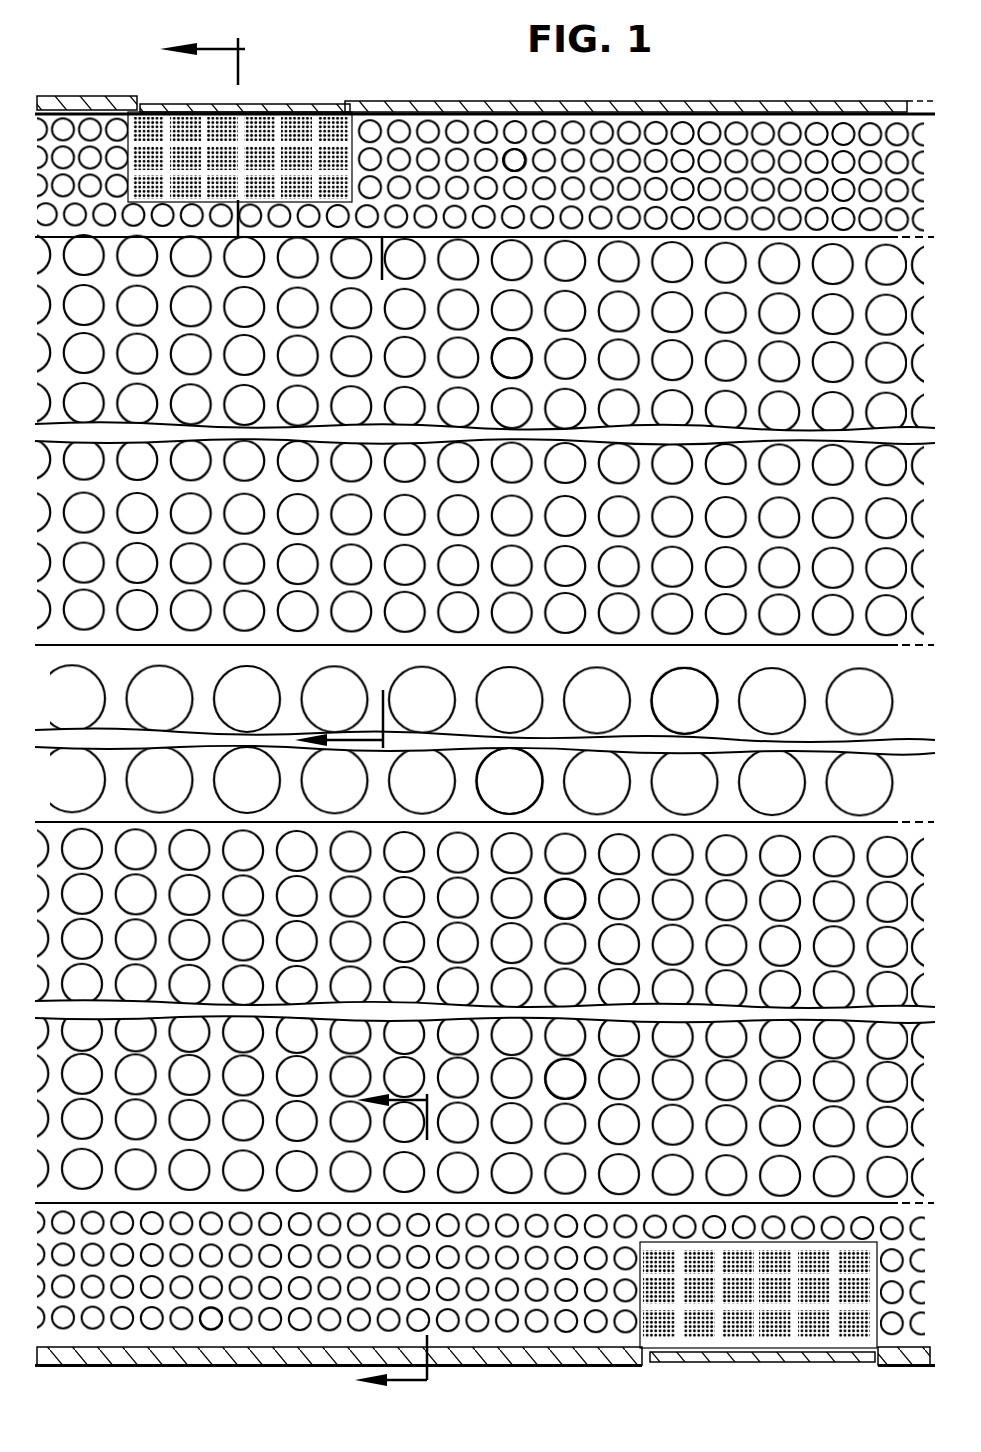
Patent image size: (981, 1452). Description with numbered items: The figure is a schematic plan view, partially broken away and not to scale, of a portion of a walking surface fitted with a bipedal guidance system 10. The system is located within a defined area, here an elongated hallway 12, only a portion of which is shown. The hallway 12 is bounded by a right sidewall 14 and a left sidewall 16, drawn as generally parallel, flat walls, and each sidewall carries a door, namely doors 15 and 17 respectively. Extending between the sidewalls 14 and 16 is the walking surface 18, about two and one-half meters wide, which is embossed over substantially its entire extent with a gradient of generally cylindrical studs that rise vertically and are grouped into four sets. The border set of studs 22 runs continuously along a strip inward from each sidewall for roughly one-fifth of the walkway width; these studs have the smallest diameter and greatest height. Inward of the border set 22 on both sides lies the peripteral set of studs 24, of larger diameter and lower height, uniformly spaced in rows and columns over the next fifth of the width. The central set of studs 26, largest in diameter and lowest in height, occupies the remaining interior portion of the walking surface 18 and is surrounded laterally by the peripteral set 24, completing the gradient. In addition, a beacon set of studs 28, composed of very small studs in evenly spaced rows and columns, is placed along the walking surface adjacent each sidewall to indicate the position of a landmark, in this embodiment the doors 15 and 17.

The bipedal guidance system 10 is at (485, 715).
The hallway 12 is at (433, 270).
The right sidewall 14 is at (565, 105).
The door 15 is at (282, 106).
The left sidewall 16 is at (510, 1362).
The door 17 is at (775, 1362).
The walking surface 18 is at (594, 265).
The border set of studs 22 is at (512, 157).
The peripteral set of studs 24 is at (502, 362).
The central set of studs 26 is at (670, 708).
The beacon set of studs 28 is at (179, 110).